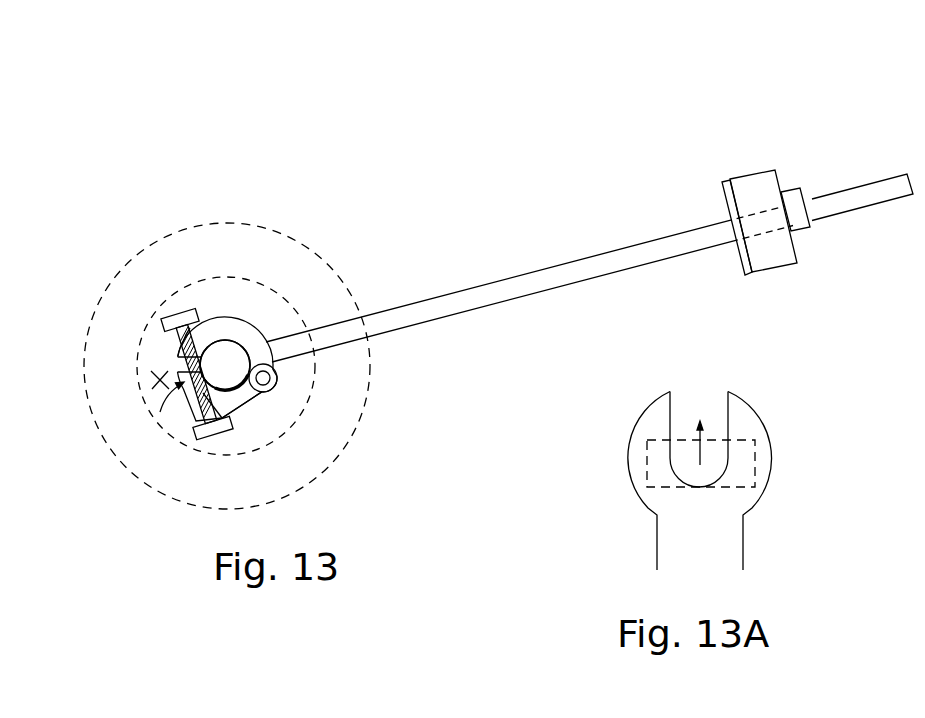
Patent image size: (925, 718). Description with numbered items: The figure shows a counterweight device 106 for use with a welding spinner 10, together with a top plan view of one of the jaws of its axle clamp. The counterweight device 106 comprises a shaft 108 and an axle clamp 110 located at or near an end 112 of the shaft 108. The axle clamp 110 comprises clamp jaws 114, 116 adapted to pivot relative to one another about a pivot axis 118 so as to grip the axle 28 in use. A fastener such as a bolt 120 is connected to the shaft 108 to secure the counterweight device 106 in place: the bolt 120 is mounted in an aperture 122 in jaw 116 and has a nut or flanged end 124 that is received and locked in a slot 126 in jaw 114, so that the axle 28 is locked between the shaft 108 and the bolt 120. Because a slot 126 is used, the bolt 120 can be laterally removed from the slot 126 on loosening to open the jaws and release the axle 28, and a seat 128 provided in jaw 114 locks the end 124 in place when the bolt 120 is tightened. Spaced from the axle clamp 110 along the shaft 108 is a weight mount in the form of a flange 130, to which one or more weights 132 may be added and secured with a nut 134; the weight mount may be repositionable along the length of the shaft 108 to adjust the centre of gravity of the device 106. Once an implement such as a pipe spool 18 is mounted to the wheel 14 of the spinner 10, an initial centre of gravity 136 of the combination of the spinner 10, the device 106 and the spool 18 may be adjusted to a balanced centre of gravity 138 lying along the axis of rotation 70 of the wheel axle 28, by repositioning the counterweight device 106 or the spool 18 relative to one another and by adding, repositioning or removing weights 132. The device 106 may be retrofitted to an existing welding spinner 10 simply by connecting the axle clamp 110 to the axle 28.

In FIG. 13, the welding spinner 10 is at (227, 344).
In FIG. 13, the wheel 14 is at (227, 370).
In FIG. 13, the pipe spool 18 is at (213, 278).
In FIG. 13, the axle 28 is at (226, 366).
In FIG. 13, the axis of rotation 70 is at (267, 343).
In FIG. 13, the counterweight device 106 is at (589, 268).
In FIG. 13, the shaft 108 is at (517, 275).
In FIG. 13, the axle clamp 110 is at (176, 342).
In FIG. 13, the end 112 is at (188, 446).
In FIG. 13, the clamp jaw 114 is at (222, 312).
In FIG. 13A, the clamp jaw 114 is at (752, 404).
In FIG. 13, the clamp jaw 116 is at (253, 402).
In FIG. 13, the pivot axis 118 is at (278, 381).
In FIG. 13, the bolt 120 is at (196, 424).
In FIG. 13, the aperture 122 is at (221, 403).
In FIG. 13, the nut or flanged end 124 is at (178, 312).
In FIG. 13A, the nut or flanged end 124 is at (757, 455).
In FIG. 13, the slot 126 is at (178, 357).
In FIG. 13A, the slot 126 is at (727, 414).
In FIG. 13, the seat 128 is at (212, 318).
In FIG. 13A, the seat 128 is at (660, 465).
In FIG. 13, the flange 130 is at (728, 182).
In FIG. 13, the weights 132 is at (760, 172).
In FIG. 13, the nut 134 is at (787, 191).
In FIG. 13, the initial centre of gravity 136 is at (151, 381).
In FIG. 13, the balanced centre of gravity 138 is at (227, 366).